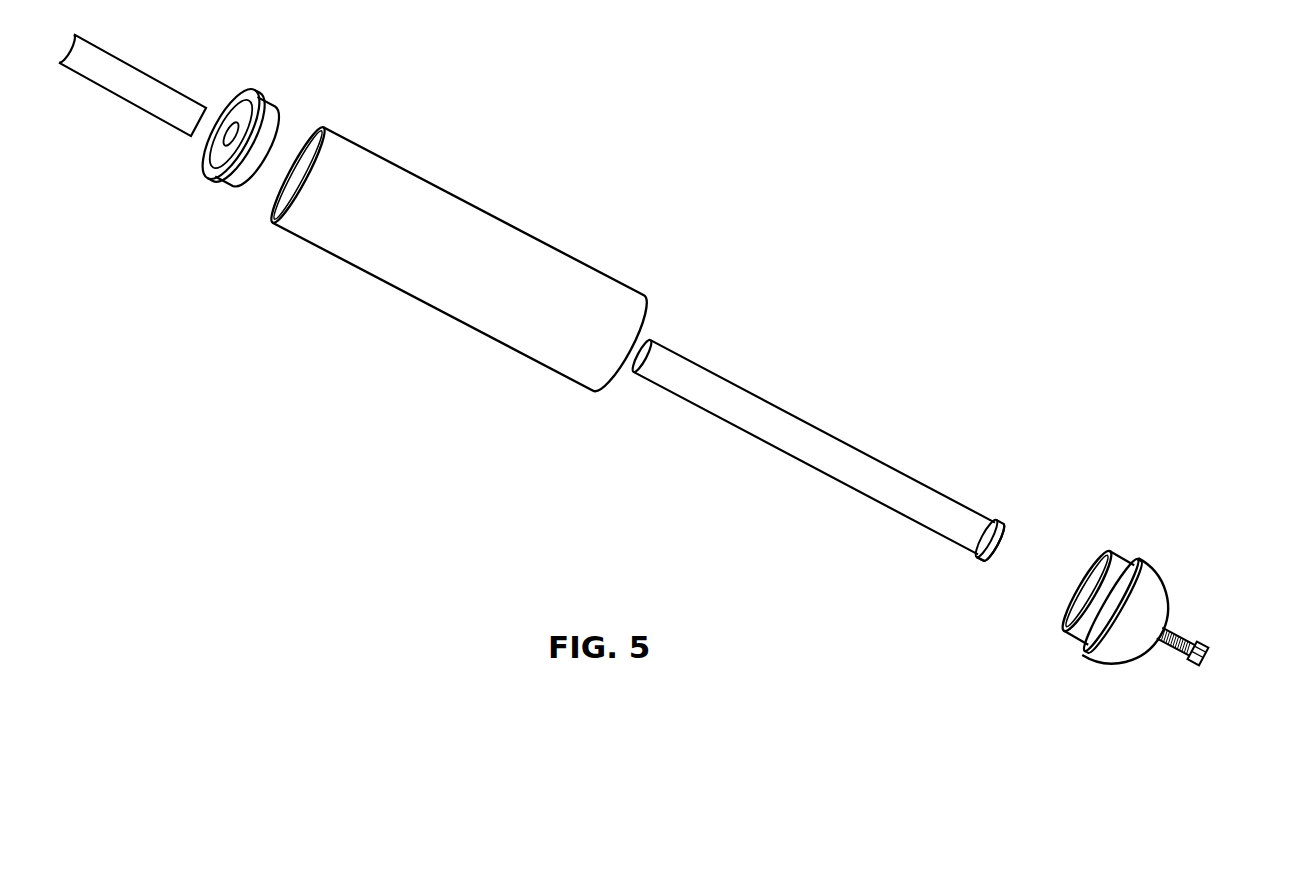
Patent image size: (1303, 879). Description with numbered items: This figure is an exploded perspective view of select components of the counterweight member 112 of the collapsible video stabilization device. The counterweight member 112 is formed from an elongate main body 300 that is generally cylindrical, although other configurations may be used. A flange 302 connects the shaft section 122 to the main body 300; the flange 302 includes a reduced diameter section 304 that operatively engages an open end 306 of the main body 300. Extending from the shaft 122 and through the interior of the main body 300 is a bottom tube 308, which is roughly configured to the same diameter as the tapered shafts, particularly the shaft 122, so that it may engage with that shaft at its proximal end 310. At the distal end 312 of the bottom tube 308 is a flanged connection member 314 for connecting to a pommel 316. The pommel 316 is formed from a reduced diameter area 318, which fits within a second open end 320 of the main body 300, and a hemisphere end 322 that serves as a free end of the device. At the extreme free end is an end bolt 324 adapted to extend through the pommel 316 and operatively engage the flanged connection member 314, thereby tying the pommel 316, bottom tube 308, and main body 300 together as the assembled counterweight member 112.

The counterweight member 112 is at (701, 136).
The shaft section 122 is at (153, 74).
The elongate main body 300 is at (619, 278).
The flange 302 is at (260, 92).
The reduced diameter section 304 is at (282, 112).
The open end 306 is at (272, 222).
The bottom tube 308 is at (855, 449).
The proximal end 310 is at (653, 339).
The distal end 312 is at (993, 521).
The flanged connection member 314 is at (978, 561).
The second open end 320 is at (998, 550).
The pommel 316 is at (1135, 563).
The reduced diameter area 318 is at (1073, 639).
The hemisphere end 322 is at (1158, 596).
The end bolt 324 is at (1216, 655).